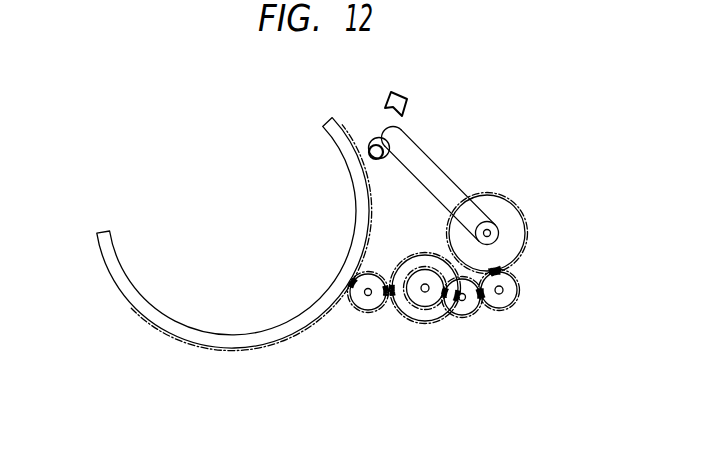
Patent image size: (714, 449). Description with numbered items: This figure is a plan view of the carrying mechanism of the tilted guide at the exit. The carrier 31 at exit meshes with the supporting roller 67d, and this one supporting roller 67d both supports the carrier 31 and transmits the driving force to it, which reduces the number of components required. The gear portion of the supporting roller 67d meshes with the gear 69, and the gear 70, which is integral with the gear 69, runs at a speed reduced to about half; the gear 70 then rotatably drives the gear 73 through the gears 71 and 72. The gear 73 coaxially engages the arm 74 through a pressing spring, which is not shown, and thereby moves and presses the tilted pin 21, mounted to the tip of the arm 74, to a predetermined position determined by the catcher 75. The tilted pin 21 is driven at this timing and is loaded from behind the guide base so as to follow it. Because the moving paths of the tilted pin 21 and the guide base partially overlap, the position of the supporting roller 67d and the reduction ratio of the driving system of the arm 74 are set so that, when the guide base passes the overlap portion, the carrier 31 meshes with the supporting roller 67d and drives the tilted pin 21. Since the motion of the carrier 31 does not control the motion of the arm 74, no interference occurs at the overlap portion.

The carrier 31 is at (234, 234).
The supporting roller 67d is at (358, 315).
The gear 69 is at (420, 303).
The gear 70 is at (461, 318).
The gear 71 is at (493, 319).
The gear 72 is at (518, 291).
The gear 73 is at (506, 233).
The arm 74 is at (439, 185).
The tilted pin 21 is at (405, 136).
The catcher 75 is at (409, 85).